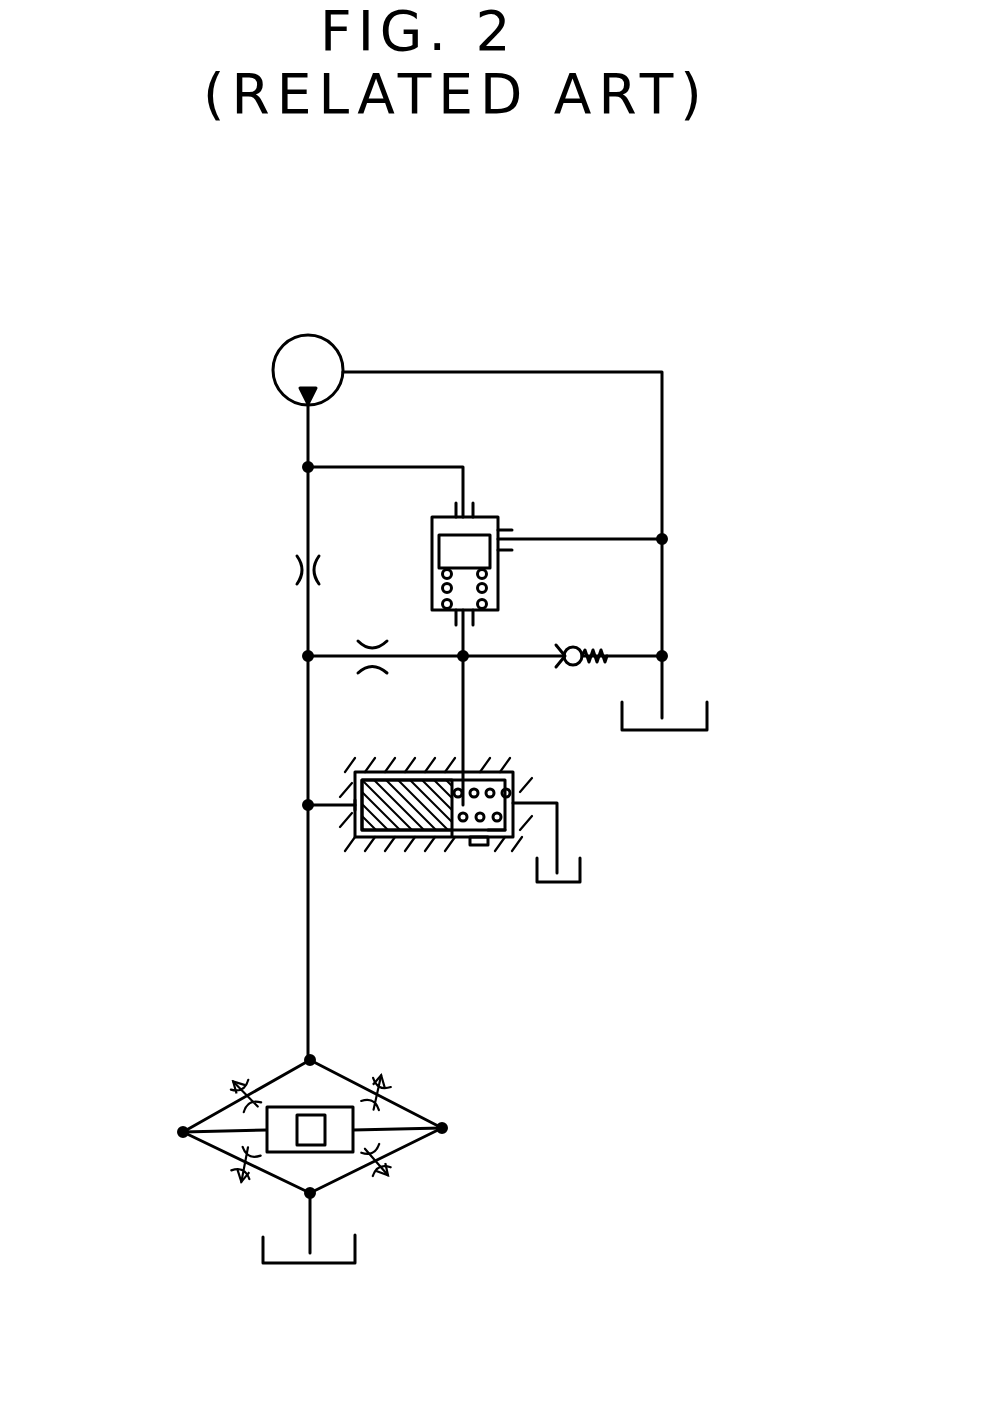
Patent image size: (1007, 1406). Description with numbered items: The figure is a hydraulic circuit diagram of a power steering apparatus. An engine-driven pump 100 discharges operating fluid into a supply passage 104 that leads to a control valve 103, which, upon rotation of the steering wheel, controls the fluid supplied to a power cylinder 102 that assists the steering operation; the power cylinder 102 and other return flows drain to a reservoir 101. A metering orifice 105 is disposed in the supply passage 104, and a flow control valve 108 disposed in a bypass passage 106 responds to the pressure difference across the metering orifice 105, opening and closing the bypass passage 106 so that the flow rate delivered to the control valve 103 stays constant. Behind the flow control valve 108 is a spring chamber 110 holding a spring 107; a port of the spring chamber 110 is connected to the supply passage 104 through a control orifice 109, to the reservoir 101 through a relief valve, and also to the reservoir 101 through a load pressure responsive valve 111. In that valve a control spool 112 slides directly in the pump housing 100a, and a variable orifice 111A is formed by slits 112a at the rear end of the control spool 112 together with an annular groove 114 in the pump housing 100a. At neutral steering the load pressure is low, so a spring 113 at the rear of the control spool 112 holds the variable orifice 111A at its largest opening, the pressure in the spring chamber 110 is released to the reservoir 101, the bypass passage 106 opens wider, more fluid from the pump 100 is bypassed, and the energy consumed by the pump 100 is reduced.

The engine-driven pump 100 is at (336, 331).
The pump housing 100a is at (362, 852).
The reservoir 101 is at (693, 732).
The power cylinder 102 is at (325, 1165).
The control valve 103 is at (206, 1101).
The supply passage 104 is at (308, 623).
The metering orifice 105 is at (299, 571).
The bypass passage 106 is at (512, 533).
The spring 107 is at (488, 588).
The flow control valve 108 is at (418, 538).
The control orifice 109 is at (366, 673).
The spring chamber 110 is at (468, 601).
The load pressure responsive valve 111 is at (404, 766).
The variable orifice 111A is at (484, 776).
The control spool 112 is at (410, 840).
The slits 112a is at (473, 852).
The spring 113 is at (494, 840).
The annular groove 114 is at (476, 847).